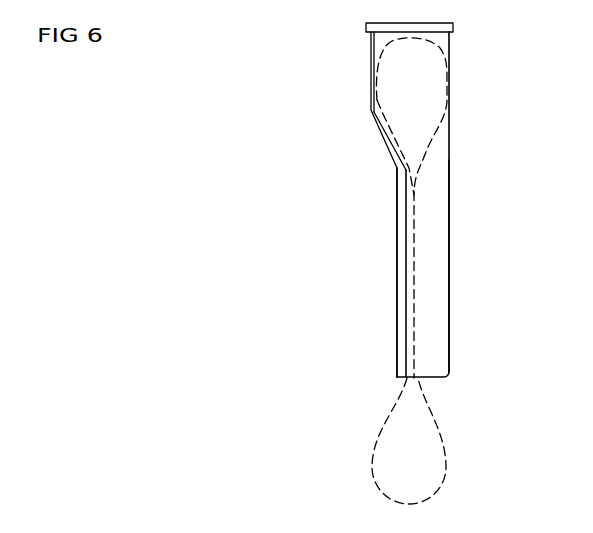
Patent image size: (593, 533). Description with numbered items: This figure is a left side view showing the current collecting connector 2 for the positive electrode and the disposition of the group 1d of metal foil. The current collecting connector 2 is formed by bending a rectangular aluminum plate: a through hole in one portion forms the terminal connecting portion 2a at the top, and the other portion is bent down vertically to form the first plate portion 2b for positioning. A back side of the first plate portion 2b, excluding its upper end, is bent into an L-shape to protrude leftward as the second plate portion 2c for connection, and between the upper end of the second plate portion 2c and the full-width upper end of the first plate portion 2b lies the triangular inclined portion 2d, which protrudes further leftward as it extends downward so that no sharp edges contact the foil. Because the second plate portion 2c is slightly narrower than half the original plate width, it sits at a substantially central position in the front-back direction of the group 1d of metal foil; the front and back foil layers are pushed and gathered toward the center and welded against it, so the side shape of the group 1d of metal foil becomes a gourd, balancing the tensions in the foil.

The current collecting connector for the positive electrode 2 is at (449, 367).
The terminal connecting portion 2a is at (382, 33).
The first plate portion 2b is at (428, 244).
The second plate portion 2c is at (407, 279).
The inclined portion 2d is at (381, 126).
The group of metal foil 1d is at (433, 148).